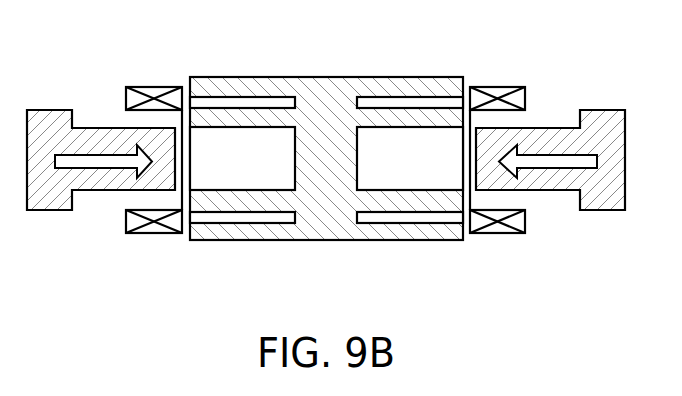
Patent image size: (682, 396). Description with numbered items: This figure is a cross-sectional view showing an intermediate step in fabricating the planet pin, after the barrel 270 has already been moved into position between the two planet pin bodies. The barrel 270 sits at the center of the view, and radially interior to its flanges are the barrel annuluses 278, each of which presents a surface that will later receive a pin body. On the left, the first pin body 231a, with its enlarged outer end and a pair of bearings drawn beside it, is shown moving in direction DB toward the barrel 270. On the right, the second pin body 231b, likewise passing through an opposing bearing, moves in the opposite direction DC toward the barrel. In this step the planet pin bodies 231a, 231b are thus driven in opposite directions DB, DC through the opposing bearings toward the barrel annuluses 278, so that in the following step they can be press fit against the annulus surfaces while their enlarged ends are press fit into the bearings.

The barrel 270 is at (337, 102).
The barrel annuluses 278 is at (260, 177).
The first pin body 231a is at (157, 178).
The second pin body 231b is at (532, 177).
The direction of movement of first pin body DB is at (100, 158).
The direction of movement of second pin body DC is at (549, 152).